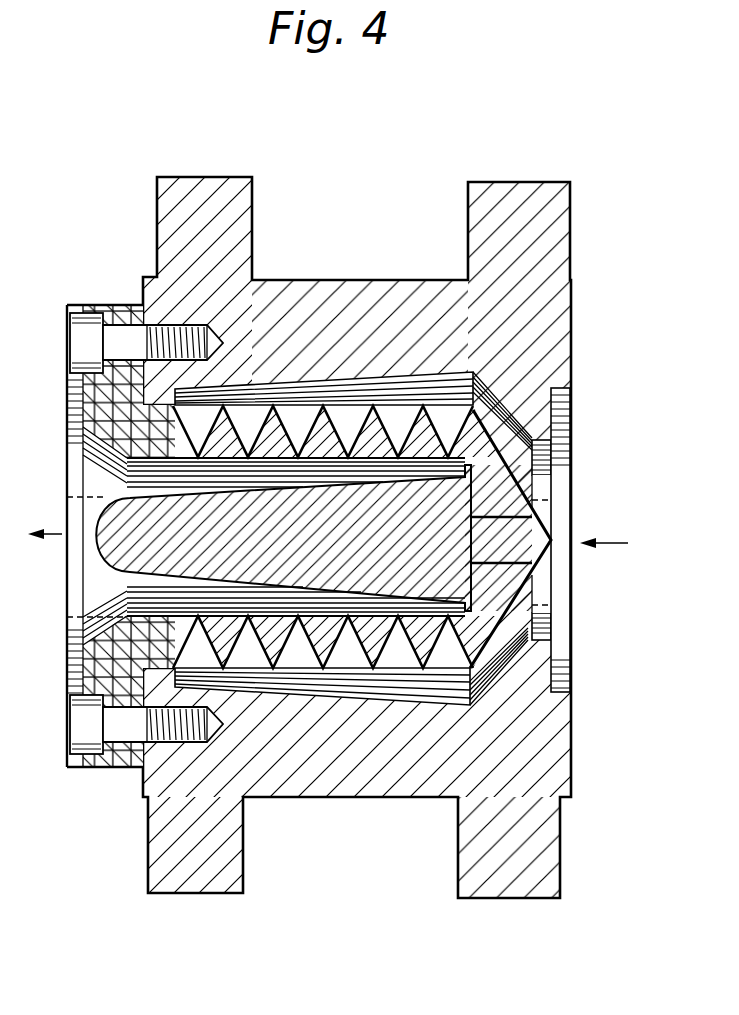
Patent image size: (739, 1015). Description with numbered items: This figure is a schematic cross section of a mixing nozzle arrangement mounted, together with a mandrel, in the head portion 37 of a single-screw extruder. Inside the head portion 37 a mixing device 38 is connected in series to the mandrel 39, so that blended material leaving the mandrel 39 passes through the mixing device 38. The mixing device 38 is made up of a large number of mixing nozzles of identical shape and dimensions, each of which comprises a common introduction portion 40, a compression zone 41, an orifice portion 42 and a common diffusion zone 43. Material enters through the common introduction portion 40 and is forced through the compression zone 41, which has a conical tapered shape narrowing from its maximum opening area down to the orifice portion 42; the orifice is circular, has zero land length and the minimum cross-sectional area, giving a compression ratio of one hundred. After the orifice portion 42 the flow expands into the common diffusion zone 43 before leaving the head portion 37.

The head portion 37 is at (432, 312).
The mixing device 38 is at (443, 398).
The mandrel 39 is at (286, 497).
The common introduction portion 40 is at (480, 355).
The compression zone 41 is at (450, 427).
The orifice portion 42 is at (532, 475).
The common diffusion zone 43 is at (533, 503).